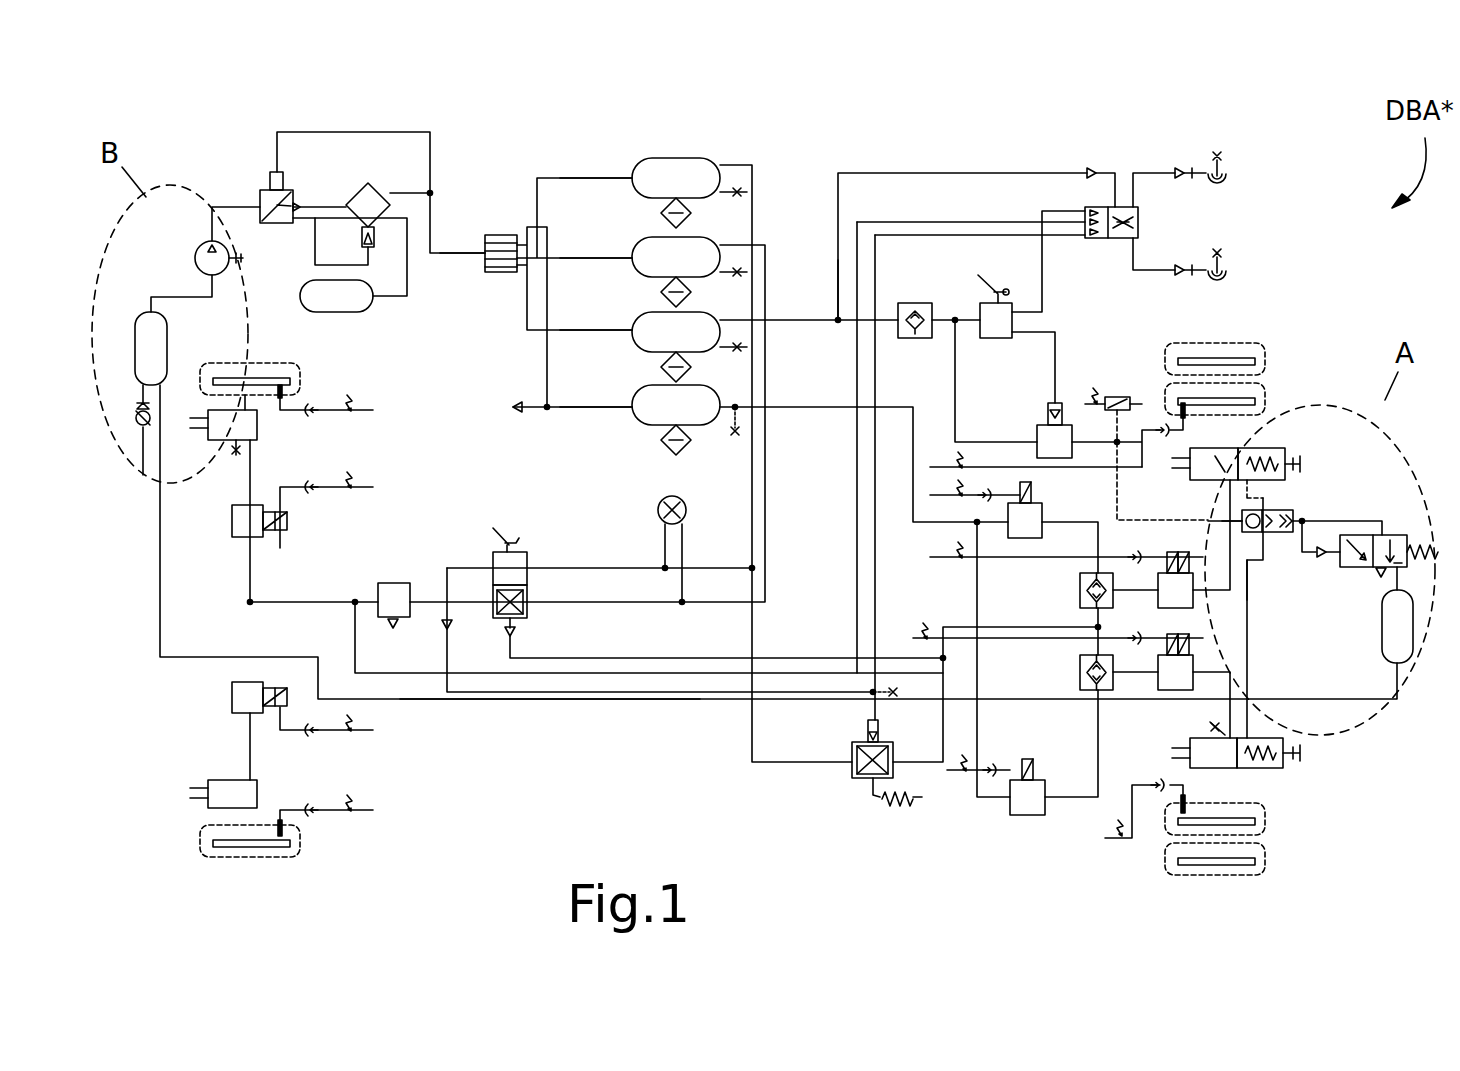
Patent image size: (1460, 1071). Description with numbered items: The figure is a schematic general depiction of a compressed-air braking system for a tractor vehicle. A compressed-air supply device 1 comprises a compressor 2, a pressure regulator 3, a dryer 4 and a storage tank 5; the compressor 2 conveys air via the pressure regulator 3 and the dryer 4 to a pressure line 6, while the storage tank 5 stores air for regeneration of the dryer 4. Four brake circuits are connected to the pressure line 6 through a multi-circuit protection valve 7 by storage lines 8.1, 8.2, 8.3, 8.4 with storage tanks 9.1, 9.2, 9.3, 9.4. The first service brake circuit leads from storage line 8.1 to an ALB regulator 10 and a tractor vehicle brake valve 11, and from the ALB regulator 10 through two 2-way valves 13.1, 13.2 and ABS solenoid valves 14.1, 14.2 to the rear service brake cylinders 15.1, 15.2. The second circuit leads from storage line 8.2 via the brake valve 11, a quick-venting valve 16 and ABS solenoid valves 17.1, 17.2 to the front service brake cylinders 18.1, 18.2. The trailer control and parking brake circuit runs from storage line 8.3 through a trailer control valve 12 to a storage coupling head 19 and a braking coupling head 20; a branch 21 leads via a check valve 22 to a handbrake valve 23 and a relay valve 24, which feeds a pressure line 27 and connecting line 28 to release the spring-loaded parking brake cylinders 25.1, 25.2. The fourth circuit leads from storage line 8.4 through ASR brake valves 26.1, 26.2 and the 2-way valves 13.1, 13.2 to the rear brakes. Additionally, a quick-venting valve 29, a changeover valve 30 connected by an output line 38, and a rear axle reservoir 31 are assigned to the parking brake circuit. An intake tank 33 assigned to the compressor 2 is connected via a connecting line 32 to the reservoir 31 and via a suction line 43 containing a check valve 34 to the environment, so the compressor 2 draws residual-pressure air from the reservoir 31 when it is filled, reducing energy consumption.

The compressed-air supply device 1 is at (232, 163).
The compressor 2 is at (208, 278).
The pressure regulator 3 is at (281, 225).
The dryer 4 is at (360, 200).
The storage tank 5 is at (335, 300).
The pressure line 6 is at (458, 258).
The multi-circuit protection valve 7 is at (500, 235).
The storage line 8.1 is at (585, 178).
The storage line 8.2 is at (585, 258).
The storage line 8.3 is at (620, 330).
The storage line 8.4 is at (615, 415).
The storage tank 9.1 is at (695, 175).
The storage tank 9.2 is at (700, 250).
The storage tank 9.3 is at (705, 320).
The storage tank 9.4 is at (720, 392).
The ALB regulator 10 is at (850, 765).
The tractor vehicle brake valve 11 is at (483, 540).
The trailer control valve 12 is at (1122, 192).
The 2-way valve 13.1 is at (1080, 590).
The 2-way valve 13.2 is at (1080, 672).
The ABS solenoid valve 14.1 is at (1183, 597).
The ABS solenoid valve 14.2 is at (1183, 667).
The service brake cylinder 15.1 is at (1215, 468).
The service brake cylinder 15.2 is at (1205, 752).
The quick-venting valve 16 is at (395, 590).
The ABS solenoid valve 17.1 is at (240, 522).
The ABS solenoid valve 17.2 is at (240, 697).
The service brake cylinder 18.1 is at (245, 425).
The service brake cylinder 18.2 is at (245, 793).
The storage coupling head 19 is at (1232, 163).
The braking coupling head 20 is at (1232, 258).
The branch 21 is at (838, 325).
The check valve 22 is at (918, 315).
The handbrake valve 23 is at (995, 340).
The relay valve 24 is at (1075, 425).
The parking brake cylinder 25.1 is at (1275, 445).
The parking brake cylinder 25.2 is at (1270, 736).
The ASR brake valve 26.1 is at (1030, 520).
The ASR brake valve 26.2 is at (1020, 802).
The pressure line 27 is at (1138, 430).
The connecting line 28 is at (1252, 587).
The quick-venting valve 29 is at (1302, 500).
The changeover valve 30 is at (1362, 570).
The additional reservoir 31 is at (1395, 625).
The connecting line 32 is at (532, 702).
The intake tank 33 is at (150, 308).
The check valve 34 is at (135, 425).
The output line 38 is at (1342, 522).
The suction line 43 is at (138, 437).